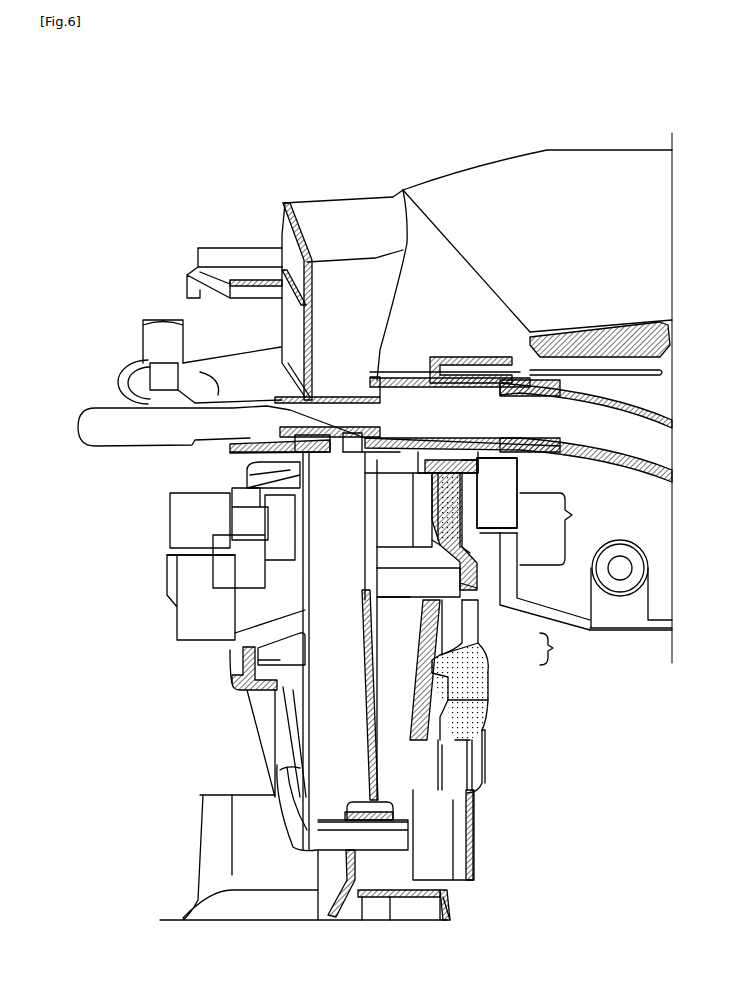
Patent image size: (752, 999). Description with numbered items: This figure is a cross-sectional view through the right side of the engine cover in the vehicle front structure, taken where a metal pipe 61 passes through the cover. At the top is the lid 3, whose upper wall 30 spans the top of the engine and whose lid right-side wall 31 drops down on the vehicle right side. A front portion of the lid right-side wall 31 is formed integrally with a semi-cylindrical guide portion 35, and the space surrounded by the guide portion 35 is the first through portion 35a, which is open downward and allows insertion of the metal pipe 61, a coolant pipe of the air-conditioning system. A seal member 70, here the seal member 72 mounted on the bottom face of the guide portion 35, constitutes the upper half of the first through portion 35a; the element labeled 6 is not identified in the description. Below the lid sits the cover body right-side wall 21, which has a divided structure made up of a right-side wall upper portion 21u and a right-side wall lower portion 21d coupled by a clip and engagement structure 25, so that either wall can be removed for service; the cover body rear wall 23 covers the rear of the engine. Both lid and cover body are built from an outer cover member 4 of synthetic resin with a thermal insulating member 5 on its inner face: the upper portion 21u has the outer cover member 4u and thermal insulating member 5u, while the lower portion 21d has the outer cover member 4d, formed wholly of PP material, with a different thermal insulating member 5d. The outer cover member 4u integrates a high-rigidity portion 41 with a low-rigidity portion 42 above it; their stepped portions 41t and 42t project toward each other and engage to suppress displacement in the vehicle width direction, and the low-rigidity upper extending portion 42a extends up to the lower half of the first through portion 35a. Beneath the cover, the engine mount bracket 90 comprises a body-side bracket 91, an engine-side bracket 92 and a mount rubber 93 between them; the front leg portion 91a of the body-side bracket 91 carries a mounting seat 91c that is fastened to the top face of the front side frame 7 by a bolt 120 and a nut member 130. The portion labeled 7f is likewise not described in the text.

The lid 3 is at (479, 163).
The upper wall 30 is at (560, 180).
The lid right-side wall 31 is at (405, 300).
The seal member 72 is at (425, 372).
The guide portion 35 is at (456, 352).
The first through portion 35a is at (440, 423).
The outer cover member 4 is at (652, 322).
The outer cover member 4u is at (560, 529).
The outer cover member 4d is at (415, 670).
The high-rigidity portion 41 is at (463, 565).
The stepped portion 41t is at (432, 538).
The low-rigidity portion 42 is at (463, 503).
The low-rigidity upper extending portion 42a is at (445, 440).
The stepped portion 42t is at (460, 550).
The thermal insulating member 5 is at (665, 548).
The thermal insulating member 5u is at (477, 588).
The thermal insulating member 5d is at (489, 700).
The handle pipe 6 is at (660, 373).
The metal pipe 61 is at (660, 412).
The front side frame 7 is at (450, 894).
The lower plate flange 7f is at (449, 912).
The cover body right-side wall 21 is at (571, 649).
The right-side wall upper portion 21u is at (491, 602).
The right-side wall lower portion 21d is at (488, 647).
The cover body rear wall 23 is at (625, 633).
The engagement structure 25 is at (360, 625).
The seal member 70 is at (330, 915).
The engine mount bracket 90 is at (152, 571).
The body-side bracket 91 is at (170, 615).
The front leg portion 91a is at (252, 716).
The mounting seat 91c is at (408, 857).
The engine-side bracket 92 is at (168, 522).
The mount rubber 93 is at (240, 648).
The bolt 120 is at (397, 812).
The nut member 130 is at (395, 917).